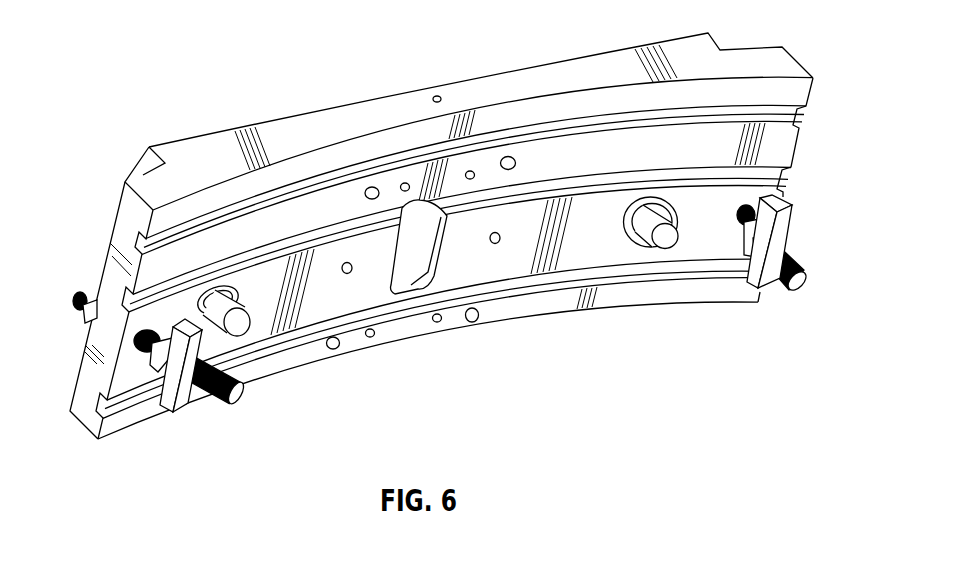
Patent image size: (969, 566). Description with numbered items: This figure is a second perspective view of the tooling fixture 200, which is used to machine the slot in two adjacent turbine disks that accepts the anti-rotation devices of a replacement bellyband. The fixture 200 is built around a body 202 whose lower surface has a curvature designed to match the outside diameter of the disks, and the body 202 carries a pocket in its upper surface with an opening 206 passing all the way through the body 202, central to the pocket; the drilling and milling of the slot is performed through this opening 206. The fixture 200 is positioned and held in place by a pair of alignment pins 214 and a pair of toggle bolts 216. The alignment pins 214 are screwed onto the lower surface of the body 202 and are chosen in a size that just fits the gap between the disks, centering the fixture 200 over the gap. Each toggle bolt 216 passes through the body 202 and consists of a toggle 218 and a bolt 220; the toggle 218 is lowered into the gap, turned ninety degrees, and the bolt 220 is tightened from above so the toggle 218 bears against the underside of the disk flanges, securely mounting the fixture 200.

The tooling fixture 200 is at (462, 248).
The body 202 is at (444, 225).
The opening 206 is at (415, 257).
The alignment pins 214 is at (667, 243).
The toggle bolts 216 is at (478, 339).
The toggle 218 is at (802, 268).
The bolt 220 is at (800, 302).